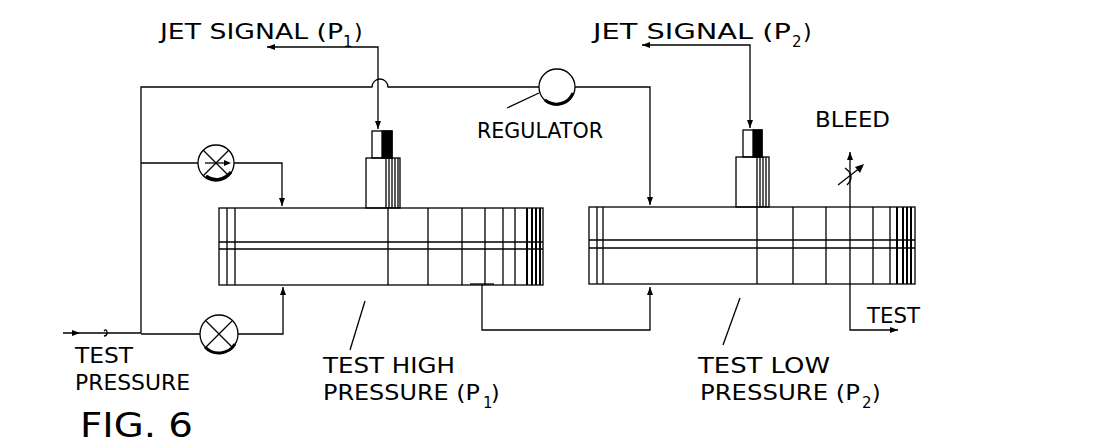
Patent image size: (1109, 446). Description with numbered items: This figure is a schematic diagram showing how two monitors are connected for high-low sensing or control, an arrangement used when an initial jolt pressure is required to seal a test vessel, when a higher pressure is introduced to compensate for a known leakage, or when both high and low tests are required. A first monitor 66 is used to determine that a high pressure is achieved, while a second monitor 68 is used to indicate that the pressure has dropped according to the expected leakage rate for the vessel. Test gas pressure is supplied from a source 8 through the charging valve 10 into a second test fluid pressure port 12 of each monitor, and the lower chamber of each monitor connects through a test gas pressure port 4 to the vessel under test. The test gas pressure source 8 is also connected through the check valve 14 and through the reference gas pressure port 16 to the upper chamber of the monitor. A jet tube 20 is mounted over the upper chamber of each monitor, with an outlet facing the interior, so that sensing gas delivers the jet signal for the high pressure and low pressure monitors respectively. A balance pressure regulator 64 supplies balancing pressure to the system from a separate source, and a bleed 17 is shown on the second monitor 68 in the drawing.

The test gas pressure port 4 is at (480, 286).
The test gas pressure source 8 is at (75, 331).
The charging valve 10 is at (203, 323).
The second test fluid pressure port 12 is at (289, 289).
The check valve 14 is at (206, 183).
The reference gas pressure port 16 is at (287, 203).
The bleed valve 17 is at (847, 167).
The jet tube 20 is at (372, 143).
The balance pressure regulator 64 is at (526, 117).
The first monitor 66 is at (506, 193).
The second monitor 68 is at (621, 194).